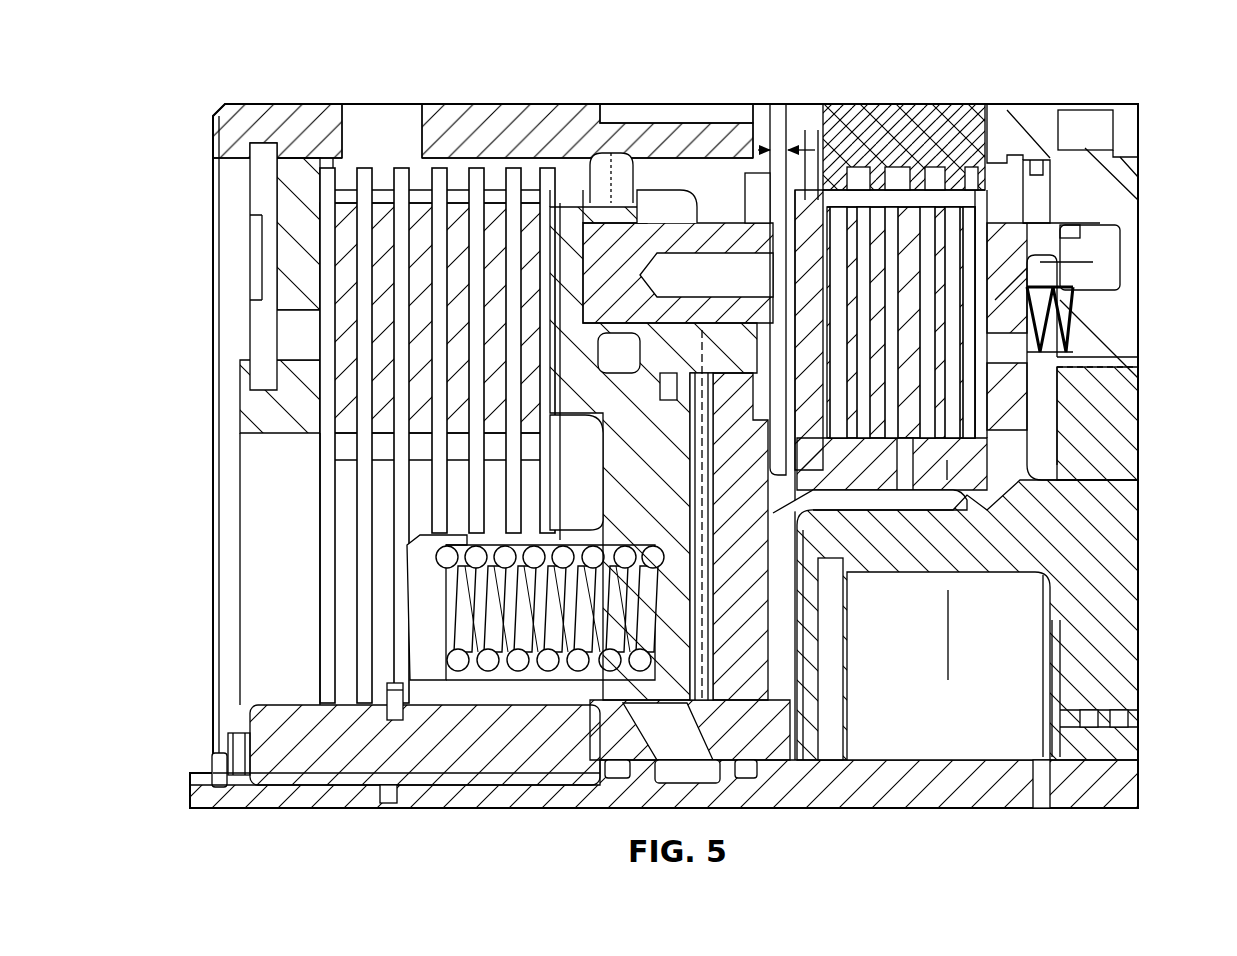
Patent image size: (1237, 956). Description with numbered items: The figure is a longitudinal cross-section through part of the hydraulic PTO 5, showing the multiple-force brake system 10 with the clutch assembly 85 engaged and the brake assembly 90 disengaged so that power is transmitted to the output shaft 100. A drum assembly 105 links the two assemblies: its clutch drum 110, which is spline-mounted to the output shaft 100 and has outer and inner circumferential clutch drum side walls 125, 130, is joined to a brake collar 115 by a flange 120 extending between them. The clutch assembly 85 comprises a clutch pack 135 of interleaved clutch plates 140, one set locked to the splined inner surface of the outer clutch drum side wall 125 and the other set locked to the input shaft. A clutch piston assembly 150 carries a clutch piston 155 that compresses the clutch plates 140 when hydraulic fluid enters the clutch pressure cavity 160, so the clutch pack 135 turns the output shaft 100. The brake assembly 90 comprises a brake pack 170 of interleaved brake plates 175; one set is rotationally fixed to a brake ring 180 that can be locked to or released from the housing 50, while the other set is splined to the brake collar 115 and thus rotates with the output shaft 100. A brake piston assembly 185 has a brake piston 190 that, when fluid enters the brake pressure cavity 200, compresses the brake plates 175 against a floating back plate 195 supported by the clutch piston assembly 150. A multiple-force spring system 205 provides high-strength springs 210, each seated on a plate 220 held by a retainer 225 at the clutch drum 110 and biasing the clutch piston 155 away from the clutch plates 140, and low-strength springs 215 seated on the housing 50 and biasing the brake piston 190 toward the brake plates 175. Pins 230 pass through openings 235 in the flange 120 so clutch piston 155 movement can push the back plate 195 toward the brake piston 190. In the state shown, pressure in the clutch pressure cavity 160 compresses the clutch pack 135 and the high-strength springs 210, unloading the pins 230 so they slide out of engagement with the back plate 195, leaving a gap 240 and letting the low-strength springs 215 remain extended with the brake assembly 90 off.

The hydraulic PTO 5 is at (1098, 40).
The multiple-force brake system 10 is at (720, 82).
The housing 50 is at (1022, 104).
The clutch assembly 85 is at (552, 88).
The brake assembly 90 is at (923, 62).
The output shaft 100 is at (985, 790).
The drum assembly 105 is at (780, 752).
The clutch drum 110 is at (258, 705).
The brake collar 115 is at (985, 482).
The flange 120 is at (755, 565).
The outer clutch drum side wall 125 is at (483, 122).
The inner clutch drum side wall 130 is at (310, 740).
The clutch pack 135 is at (575, 165).
The clutch plates 140 is at (422, 213).
The clutch piston assembly 150 is at (648, 185).
The clutch piston 155 is at (668, 480).
The clutch pressure cavity 160 is at (680, 662).
The brake pack 170 is at (984, 116).
The brake plates 175 is at (920, 215).
The brake ring 180 is at (851, 103).
The brake piston assembly 185 is at (1066, 118).
The brake piston 190 is at (1022, 187).
The back plate 195 is at (783, 195).
The brake pressure cavity 200 is at (1040, 183).
The multiple-force spring system 205 is at (452, 743).
The high-strength springs 210 is at (520, 686).
The low-strength springs 215 is at (1078, 312).
The plate 220 is at (412, 562).
The retainer 225 is at (393, 688).
The pins 230 is at (702, 232).
The openings 235 is at (762, 312).
The gap 240 is at (790, 298).